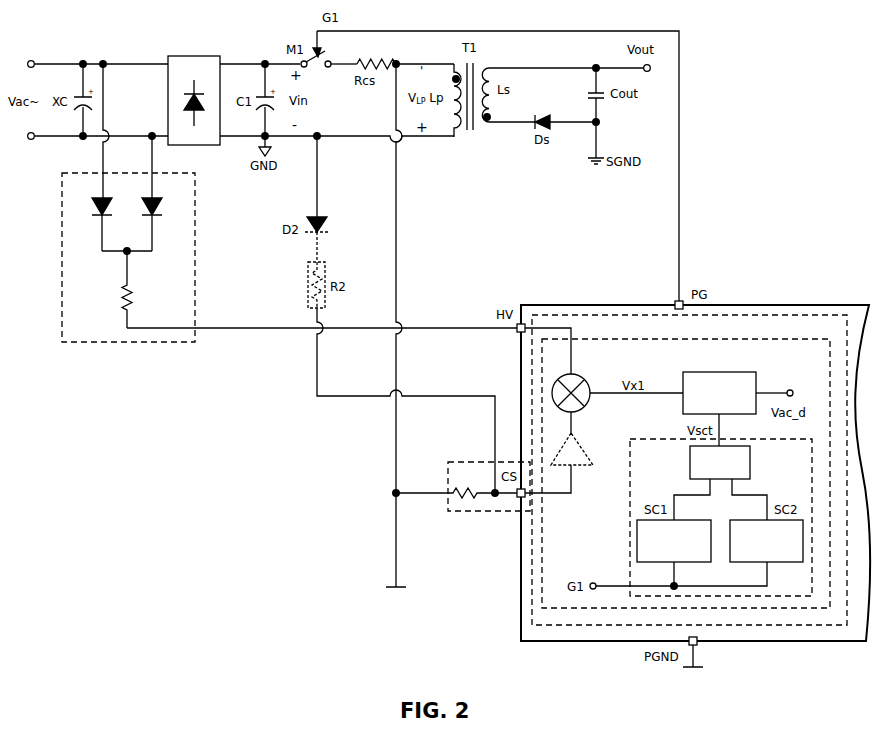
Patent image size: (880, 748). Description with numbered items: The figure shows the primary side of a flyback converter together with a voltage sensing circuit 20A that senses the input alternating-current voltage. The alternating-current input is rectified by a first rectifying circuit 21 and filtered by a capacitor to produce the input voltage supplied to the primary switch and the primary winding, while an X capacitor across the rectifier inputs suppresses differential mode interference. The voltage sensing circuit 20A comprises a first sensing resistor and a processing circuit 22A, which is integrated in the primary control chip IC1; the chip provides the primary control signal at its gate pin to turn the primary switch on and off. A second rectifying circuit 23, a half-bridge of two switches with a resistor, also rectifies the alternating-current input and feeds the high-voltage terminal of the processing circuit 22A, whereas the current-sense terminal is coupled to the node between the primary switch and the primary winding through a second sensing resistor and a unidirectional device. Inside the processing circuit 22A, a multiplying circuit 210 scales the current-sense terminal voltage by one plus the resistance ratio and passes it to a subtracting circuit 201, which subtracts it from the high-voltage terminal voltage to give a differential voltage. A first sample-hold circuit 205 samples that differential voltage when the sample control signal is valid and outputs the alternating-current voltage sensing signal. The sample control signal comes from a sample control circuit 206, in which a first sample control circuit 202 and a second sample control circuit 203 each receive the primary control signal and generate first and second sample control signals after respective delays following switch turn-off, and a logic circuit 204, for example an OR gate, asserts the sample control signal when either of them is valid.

The first rectifying circuit 21 is at (190, 56).
The second rectifying circuit 23 is at (128, 274).
The voltage sensing circuit 20A is at (448, 464).
The primary control chip IC1 is at (815, 305).
The processing circuit 22A is at (686, 473).
The subtracting circuit 201 is at (588, 381).
The first sample-hold circuit 205 is at (720, 372).
The multiplying circuit 210 is at (585, 444).
The logic circuit 204 is at (720, 462).
The first sample control circuit 202 is at (674, 541).
The second sample control circuit 203 is at (766, 541).
The sample control circuit 206 is at (628, 552).